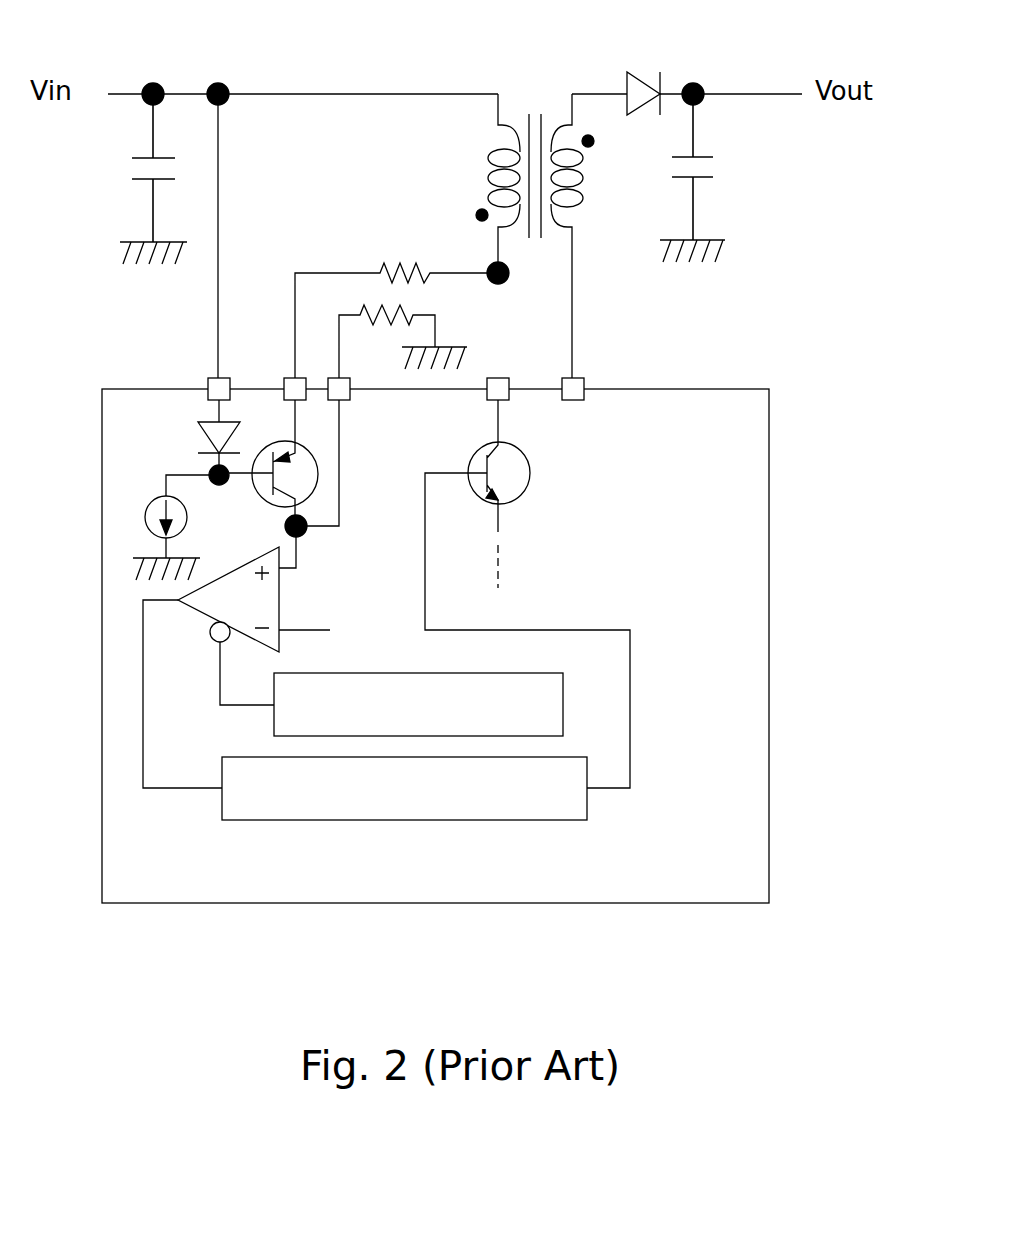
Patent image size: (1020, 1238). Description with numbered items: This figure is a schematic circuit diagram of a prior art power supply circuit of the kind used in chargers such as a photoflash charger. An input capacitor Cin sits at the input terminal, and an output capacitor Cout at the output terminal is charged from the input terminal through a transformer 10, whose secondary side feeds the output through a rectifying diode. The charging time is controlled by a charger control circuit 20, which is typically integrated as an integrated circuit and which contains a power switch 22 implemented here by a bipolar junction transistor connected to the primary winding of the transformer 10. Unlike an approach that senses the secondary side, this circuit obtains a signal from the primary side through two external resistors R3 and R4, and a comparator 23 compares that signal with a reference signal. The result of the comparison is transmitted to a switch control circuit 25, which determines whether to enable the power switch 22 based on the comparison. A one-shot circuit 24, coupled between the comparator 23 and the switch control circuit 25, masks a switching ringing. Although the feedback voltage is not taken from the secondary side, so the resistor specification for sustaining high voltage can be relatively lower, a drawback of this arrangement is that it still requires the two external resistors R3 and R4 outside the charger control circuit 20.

The transformer 10 is at (548, 85).
The charger control circuit 20 is at (769, 447).
The power switch 22 is at (518, 494).
The comparator 23 is at (262, 555).
The one-shot circuit 24 is at (418, 704).
The switch control circuit 25 is at (404, 788).
The external resistor R3 is at (402, 299).
The external resistor R4 is at (403, 341).
The input capacitor Cin is at (124, 179).
The output capacitor Cout is at (731, 178).